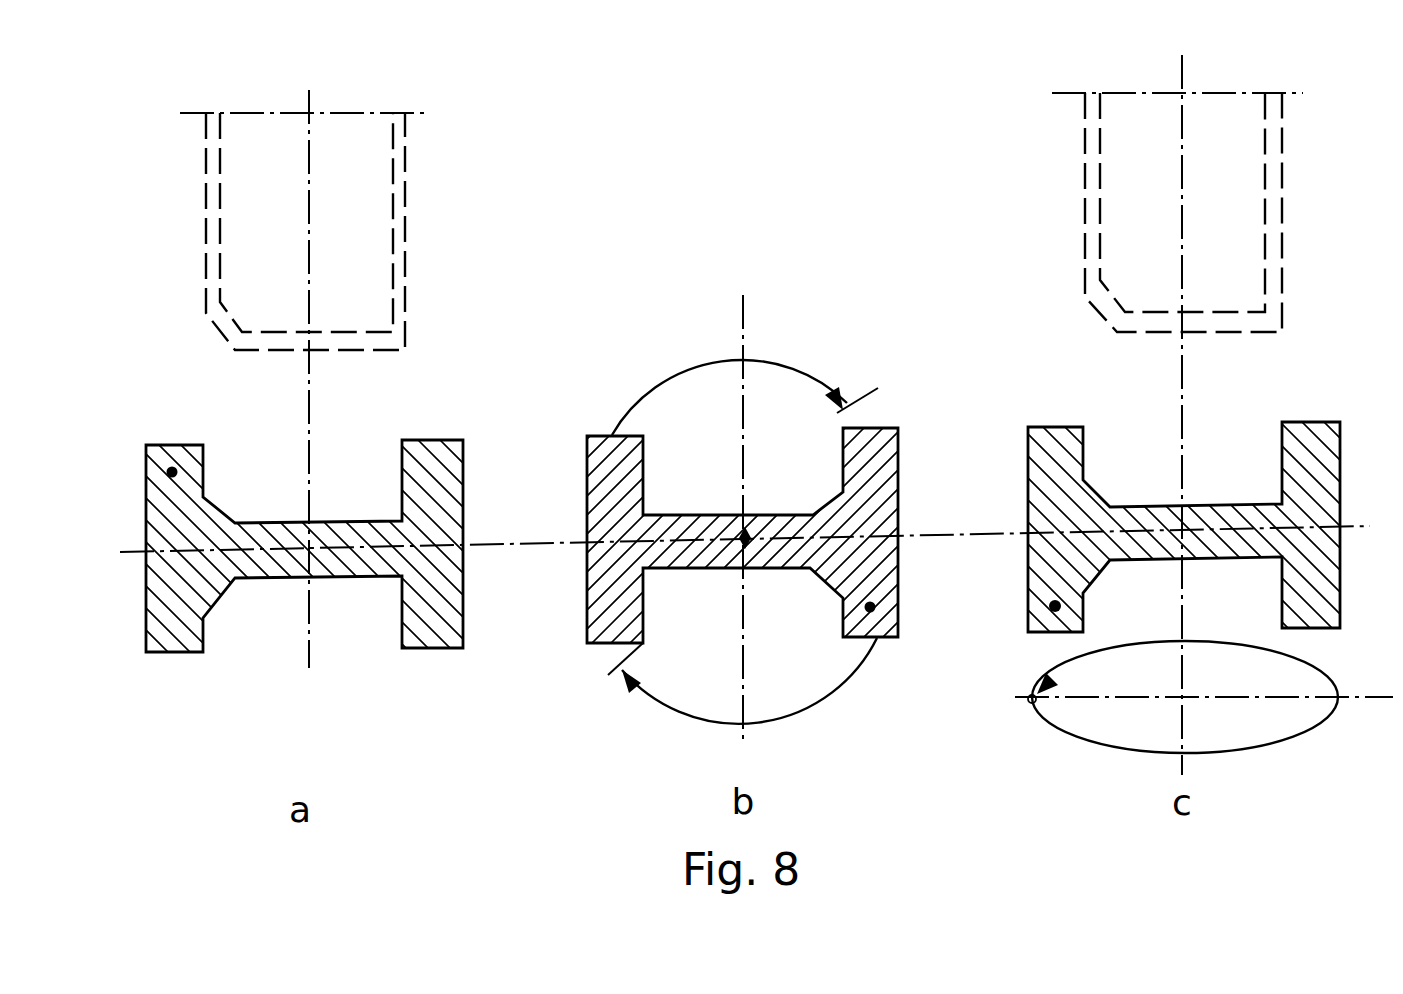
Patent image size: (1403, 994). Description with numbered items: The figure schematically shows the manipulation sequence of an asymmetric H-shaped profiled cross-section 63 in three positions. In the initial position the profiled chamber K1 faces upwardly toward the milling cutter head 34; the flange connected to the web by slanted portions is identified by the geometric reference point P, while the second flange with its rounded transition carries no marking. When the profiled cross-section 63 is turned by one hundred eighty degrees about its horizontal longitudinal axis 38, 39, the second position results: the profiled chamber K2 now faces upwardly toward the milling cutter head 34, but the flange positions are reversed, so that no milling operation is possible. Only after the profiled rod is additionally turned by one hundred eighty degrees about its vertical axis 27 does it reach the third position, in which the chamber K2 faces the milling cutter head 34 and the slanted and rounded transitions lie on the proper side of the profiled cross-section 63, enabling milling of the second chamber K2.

The milling cutter head 34 is at (741, 221).
The vertical turning axis 27 is at (309, 393).
The asymmetric H-shaped profiled cross-section 63 is at (433, 622).
The horizontal turning axis 38 is at (621, 460).
The horizontal turning axis 39 is at (745, 537).
The geometric reference point P is at (172, 472).
The profiled chamber K1 is at (745, 539).
The profiled chamber K2 is at (745, 535).